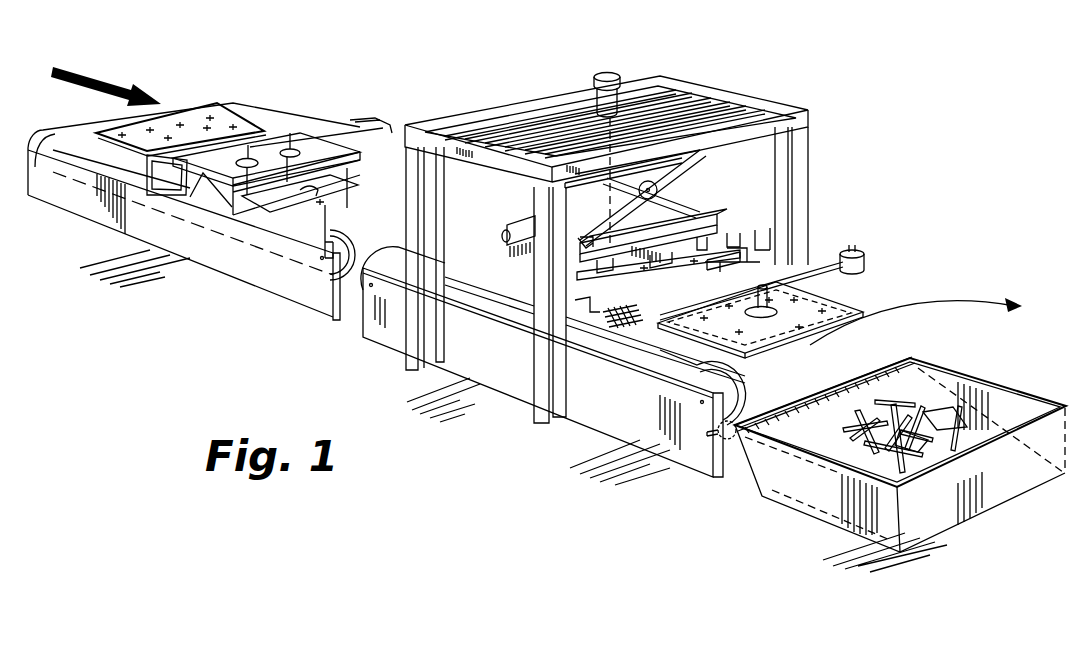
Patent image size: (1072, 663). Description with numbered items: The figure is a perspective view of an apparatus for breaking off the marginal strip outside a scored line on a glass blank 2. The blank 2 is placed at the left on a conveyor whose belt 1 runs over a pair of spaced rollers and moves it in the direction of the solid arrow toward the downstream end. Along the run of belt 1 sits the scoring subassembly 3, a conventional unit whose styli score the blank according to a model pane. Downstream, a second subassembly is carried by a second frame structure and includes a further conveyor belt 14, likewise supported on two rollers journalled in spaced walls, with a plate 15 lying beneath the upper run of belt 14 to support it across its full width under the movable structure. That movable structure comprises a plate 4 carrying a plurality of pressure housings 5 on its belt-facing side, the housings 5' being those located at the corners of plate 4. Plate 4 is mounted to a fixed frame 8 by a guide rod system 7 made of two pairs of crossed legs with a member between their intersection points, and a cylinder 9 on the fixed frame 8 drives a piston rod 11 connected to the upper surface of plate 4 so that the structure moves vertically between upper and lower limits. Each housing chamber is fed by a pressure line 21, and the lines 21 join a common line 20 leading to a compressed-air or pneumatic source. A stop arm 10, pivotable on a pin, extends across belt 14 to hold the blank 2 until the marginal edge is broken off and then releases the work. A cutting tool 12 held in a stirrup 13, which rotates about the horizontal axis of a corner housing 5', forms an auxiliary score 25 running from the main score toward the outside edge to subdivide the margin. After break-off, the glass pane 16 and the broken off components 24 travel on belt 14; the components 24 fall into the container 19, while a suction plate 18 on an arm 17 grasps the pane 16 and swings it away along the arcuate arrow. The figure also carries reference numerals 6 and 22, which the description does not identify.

The belt 1 is at (78, 128).
The glass blank 2 is at (187, 112).
The scoring subassembly 3 is at (312, 200).
The plate 4 is at (702, 215).
The pressure housings 5 is at (634, 236).
The pressure housings 5' is at (701, 232).
The component pins 6 is at (518, 254).
The guide rod system 7 is at (688, 182).
The fixed frame 8 is at (753, 101).
The cylinder 9 is at (612, 73).
The arm 10 is at (722, 265).
The piston rod 11 is at (618, 212).
The cutting tool 12 is at (722, 264).
The stirrup 13 is at (575, 272).
The belt 14 is at (403, 270).
The plate 15 is at (528, 298).
The glass pane 16 is at (810, 322).
The arm 17 is at (868, 272).
The suction plate 18 is at (780, 312).
The container 19 is at (1005, 395).
The line 20 is at (732, 442).
The pressure line 21 is at (503, 240).
The clamp 22 is at (728, 232).
The broken off components 24 is at (748, 350).
The auxiliary score 25 is at (900, 312).